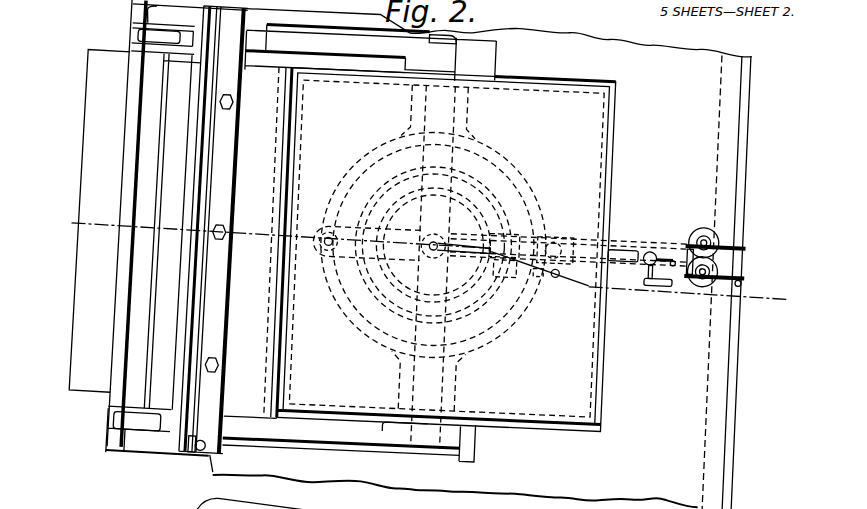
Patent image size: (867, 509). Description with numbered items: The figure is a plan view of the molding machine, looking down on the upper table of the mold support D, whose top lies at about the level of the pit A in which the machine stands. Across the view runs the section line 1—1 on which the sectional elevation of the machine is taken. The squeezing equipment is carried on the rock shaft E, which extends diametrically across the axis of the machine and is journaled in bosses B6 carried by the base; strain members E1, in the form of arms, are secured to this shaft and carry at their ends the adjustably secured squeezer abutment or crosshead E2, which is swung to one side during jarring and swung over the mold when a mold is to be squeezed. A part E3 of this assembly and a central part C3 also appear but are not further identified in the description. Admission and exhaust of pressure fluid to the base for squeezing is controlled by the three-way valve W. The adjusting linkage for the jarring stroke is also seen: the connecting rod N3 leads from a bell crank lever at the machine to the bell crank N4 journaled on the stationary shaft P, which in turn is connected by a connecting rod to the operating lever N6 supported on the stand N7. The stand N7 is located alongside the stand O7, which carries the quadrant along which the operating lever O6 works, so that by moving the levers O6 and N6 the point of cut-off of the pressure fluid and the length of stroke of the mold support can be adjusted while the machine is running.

The squeezer abutment E2 is at (125, 197).
The pit A is at (238, 457).
The strain members E1 is at (336, 467).
The mold support D is at (583, 384).
The guide bar of slide E3 is at (276, 262).
The bosses B6 is at (464, 113).
The hub C3 is at (445, 229).
The rock shaft E is at (423, 254).
The section line 1— 1 is at (275, 234).
The connecting rod N3 is at (673, 252).
The stationary shaft P is at (672, 250).
The bell crank N4 is at (689, 236).
The stand N7 is at (703, 223).
The operating lever N6 is at (737, 232).
The operating lever O6 is at (744, 274).
The stand O7 is at (706, 279).
The three-way valve W is at (650, 280).